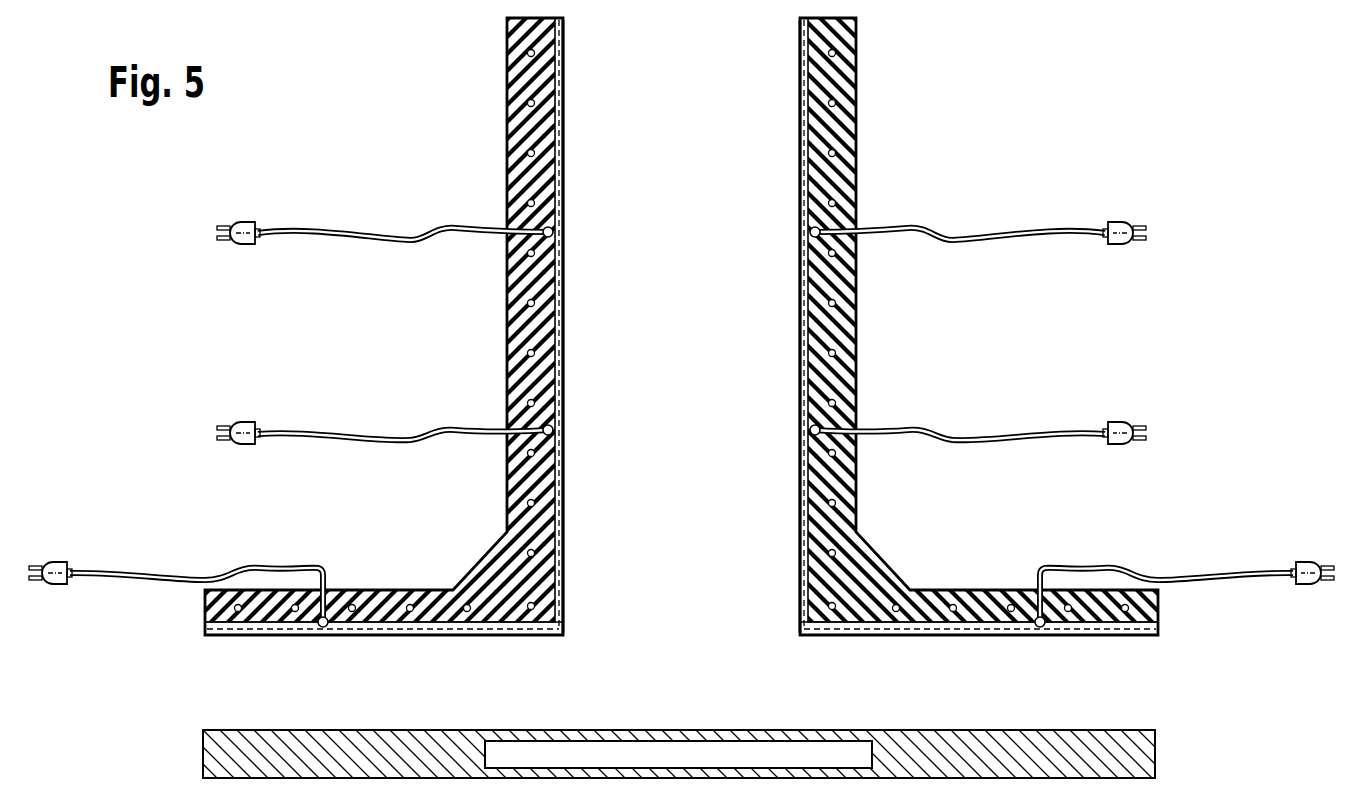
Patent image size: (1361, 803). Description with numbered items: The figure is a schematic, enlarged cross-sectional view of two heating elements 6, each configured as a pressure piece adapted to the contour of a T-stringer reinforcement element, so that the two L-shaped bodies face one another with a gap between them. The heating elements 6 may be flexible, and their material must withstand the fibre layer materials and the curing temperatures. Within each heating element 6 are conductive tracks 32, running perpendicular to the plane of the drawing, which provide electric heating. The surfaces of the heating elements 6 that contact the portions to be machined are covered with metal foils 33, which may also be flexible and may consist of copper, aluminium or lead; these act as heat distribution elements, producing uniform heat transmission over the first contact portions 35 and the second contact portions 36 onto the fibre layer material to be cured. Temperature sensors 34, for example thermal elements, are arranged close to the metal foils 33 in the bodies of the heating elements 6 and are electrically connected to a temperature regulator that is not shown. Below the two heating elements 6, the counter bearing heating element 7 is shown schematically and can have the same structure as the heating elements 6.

The heating element 6 is at (528, 128).
The counter bearing heating element 7 is at (675, 755).
The conductive tracks 32 is at (530, 304).
The metal foils 33 is at (563, 346).
The temperature sensors 34 is at (412, 438).
The first contact portions 35 is at (387, 651).
The second contact portions 36 is at (573, 540).